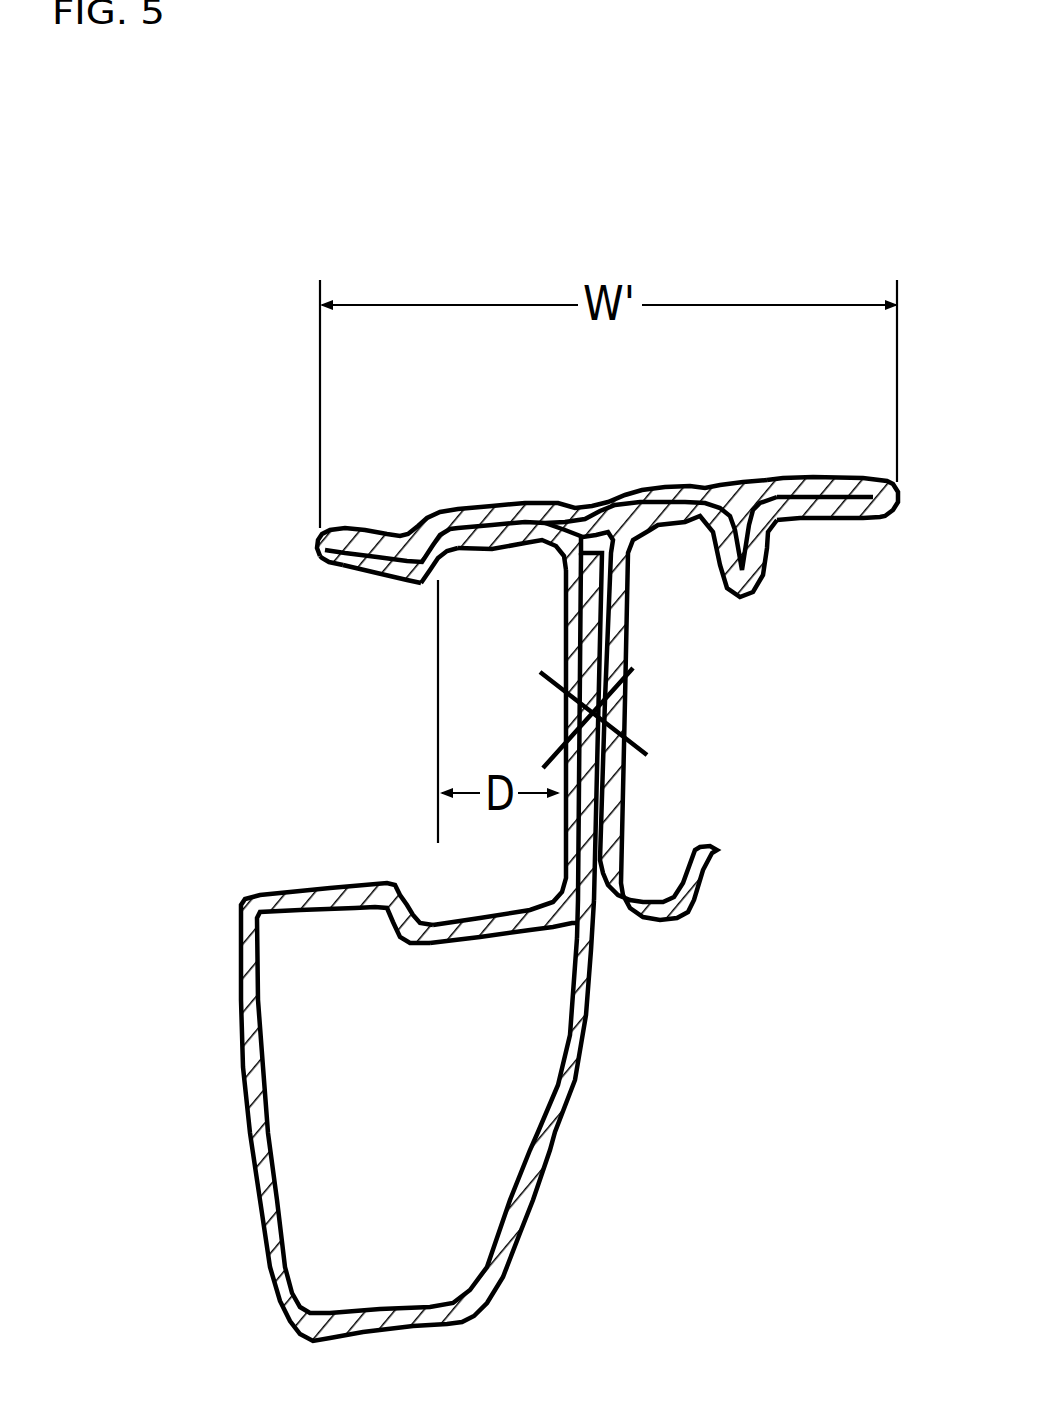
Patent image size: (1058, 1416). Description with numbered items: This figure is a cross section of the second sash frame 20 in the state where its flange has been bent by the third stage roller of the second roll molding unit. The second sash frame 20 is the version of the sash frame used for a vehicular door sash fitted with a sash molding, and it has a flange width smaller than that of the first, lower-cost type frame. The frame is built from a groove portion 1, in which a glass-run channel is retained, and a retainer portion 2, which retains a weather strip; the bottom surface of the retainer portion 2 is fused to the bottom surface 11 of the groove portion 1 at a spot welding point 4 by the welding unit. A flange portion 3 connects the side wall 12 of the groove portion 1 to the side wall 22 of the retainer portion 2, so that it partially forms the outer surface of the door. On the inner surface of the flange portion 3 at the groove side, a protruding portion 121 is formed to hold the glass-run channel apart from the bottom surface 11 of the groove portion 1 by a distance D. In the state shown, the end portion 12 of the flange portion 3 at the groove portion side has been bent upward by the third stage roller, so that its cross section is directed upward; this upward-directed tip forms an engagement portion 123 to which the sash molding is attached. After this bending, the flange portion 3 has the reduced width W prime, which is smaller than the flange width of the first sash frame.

The second sash frame 20 is at (548, 781).
The groove portion 1 is at (421, 870).
The retainer portion 2 is at (607, 660).
The flange portion 3 is at (537, 501).
The spot welding point 4 is at (636, 658).
The bottom surface 11 is at (562, 878).
The end portion 12 is at (344, 530).
The protruding portion 121 is at (422, 595).
The engagement portion 123 is at (324, 535).
The side wall 22 is at (852, 525).